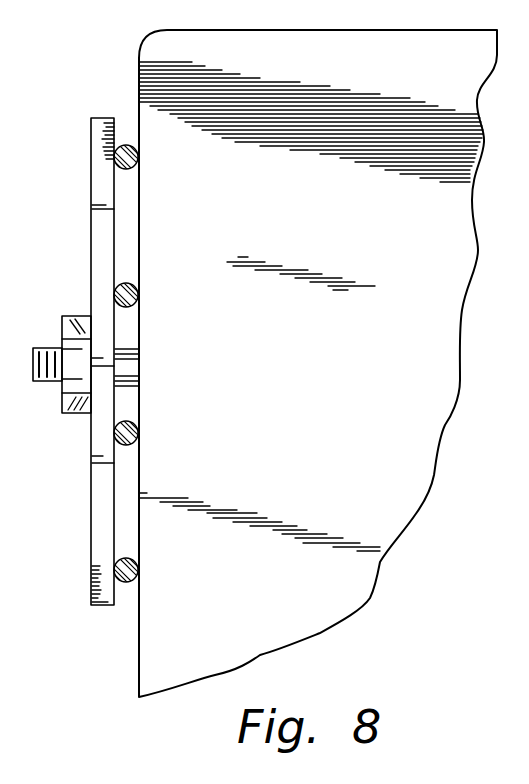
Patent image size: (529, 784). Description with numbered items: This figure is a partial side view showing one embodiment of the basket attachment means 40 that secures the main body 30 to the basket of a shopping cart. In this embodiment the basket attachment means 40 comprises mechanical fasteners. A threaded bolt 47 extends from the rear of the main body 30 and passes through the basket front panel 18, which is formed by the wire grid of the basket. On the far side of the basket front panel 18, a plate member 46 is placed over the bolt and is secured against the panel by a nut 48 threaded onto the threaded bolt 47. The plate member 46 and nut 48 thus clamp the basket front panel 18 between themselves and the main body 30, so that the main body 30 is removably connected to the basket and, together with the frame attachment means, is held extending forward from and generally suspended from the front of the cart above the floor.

The basket front panel 18 is at (126, 145).
The main body 30 is at (373, 475).
The basket attachment means 40 is at (76, 361).
The plate member 46 is at (103, 200).
The threaded bolt 47 is at (43, 347).
The nut 48 is at (60, 398).